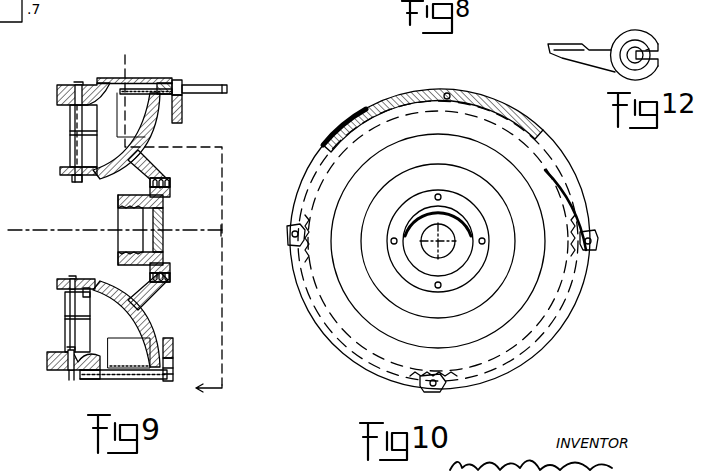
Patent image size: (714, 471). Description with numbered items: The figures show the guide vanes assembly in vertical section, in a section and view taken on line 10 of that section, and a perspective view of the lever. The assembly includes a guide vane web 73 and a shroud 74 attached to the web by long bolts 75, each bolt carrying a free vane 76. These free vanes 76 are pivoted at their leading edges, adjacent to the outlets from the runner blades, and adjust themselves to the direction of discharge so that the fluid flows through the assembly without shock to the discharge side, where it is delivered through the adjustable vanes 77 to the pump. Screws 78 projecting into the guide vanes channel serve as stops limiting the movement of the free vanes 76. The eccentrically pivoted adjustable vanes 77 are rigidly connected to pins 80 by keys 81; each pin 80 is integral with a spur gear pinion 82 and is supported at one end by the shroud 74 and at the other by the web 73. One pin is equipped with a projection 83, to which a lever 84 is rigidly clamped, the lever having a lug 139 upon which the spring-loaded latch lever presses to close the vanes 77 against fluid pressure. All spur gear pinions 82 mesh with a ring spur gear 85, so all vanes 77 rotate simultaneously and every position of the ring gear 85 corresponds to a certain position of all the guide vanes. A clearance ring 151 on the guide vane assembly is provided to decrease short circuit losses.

In FIG. 9, the section line 10- 10 is at (179, 230).
In FIG. 9, the guide vane web 73 is at (157, 337).
In FIG. 9, the shroud 74 is at (58, 356).
In FIG. 9, the long bolts 75 is at (70, 277).
In FIG. 9, the free vane 76 is at (72, 328).
In FIG. 10, the adjustable vanes 77 is at (495, 108).
In FIG. 9, the screws 78 is at (88, 288).
In FIG. 9, the pins 80 is at (93, 378).
In FIG. 10, the pins 80 is at (291, 237).
In FIG. 9, the keys 81 is at (135, 380).
In FIG. 10, the keys 81 is at (449, 93).
In FIG. 9, the spur gear pinion 82 is at (179, 80).
In FIG. 10, the spur gear pinion 82 is at (288, 229).
In FIG. 9, the projection 83 is at (218, 88).
In FIG. 12, the lever 84 is at (637, 32).
In FIG. 9, the ring spur gear 85 is at (183, 113).
In FIG. 10, the ring spur gear 85 is at (330, 232).
In FIG. 12, the lug 139 is at (576, 24).
In FIG. 9, the clearance ring 151 is at (57, 84).